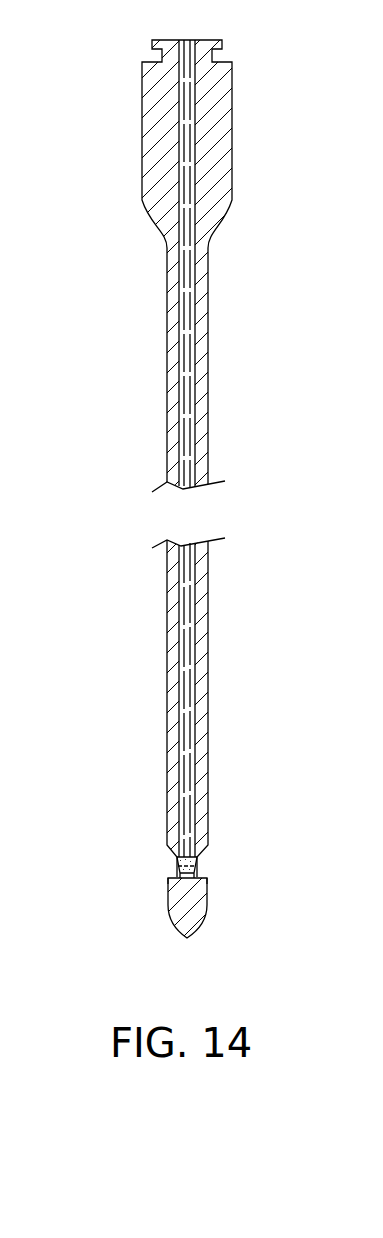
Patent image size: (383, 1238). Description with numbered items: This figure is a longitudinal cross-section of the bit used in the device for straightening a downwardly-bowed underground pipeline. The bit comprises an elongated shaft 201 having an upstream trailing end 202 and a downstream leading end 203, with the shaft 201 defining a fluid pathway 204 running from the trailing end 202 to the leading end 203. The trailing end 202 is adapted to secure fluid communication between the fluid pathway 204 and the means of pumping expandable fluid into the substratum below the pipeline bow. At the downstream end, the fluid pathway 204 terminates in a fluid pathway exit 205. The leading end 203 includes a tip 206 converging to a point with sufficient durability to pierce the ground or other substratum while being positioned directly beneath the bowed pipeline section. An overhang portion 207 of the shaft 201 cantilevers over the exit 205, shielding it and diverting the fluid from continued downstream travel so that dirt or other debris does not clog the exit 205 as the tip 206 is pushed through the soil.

The elongated shaft 201 is at (170, 263).
The trailing end 202 is at (155, 105).
The leading end 203 is at (202, 808).
The fluid pathway 204 is at (185, 440).
The fluid pathway exit 205 is at (198, 872).
The tip 206 is at (197, 905).
The overhang portion 207 is at (170, 882).